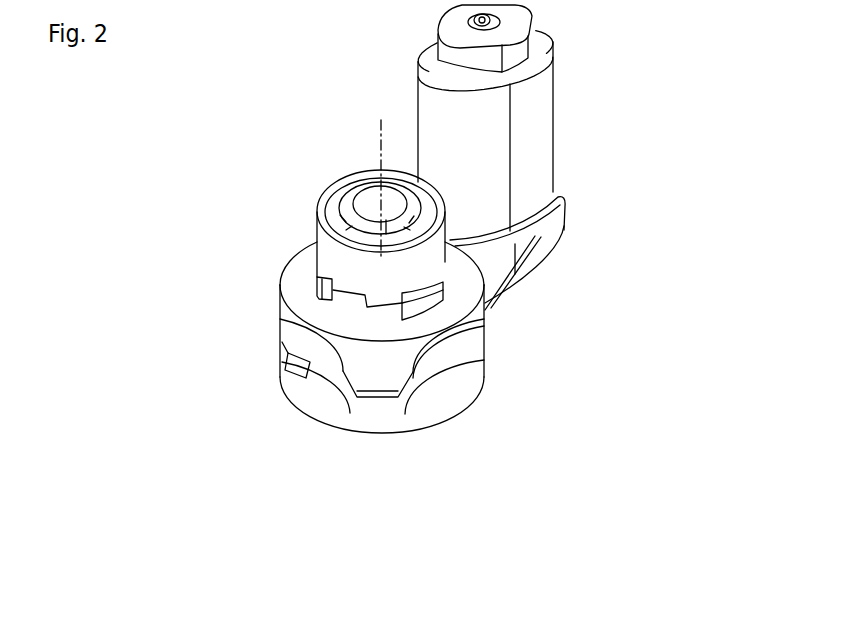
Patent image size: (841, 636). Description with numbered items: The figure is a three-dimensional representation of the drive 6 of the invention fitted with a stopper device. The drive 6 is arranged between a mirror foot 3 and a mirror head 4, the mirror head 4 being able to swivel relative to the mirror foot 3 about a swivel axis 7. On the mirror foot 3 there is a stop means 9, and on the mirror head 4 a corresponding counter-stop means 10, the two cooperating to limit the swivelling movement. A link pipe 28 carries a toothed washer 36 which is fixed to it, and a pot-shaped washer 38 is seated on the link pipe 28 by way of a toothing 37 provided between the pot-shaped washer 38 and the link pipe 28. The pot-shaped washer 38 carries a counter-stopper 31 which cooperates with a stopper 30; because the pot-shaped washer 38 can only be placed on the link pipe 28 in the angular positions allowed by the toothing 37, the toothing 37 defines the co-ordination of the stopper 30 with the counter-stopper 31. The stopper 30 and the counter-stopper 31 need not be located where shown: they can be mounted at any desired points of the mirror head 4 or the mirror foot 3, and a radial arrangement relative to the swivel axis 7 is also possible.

The mirror foot 3 is at (425, 412).
The mirror head 4 is at (290, 327).
The drive 6 is at (561, 76).
The swivel axis 7 is at (381, 135).
The stop means 9 is at (292, 366).
The counter-stop means 10 is at (372, 385).
The link pipe 28 is at (357, 180).
The stopper 30 is at (318, 280).
The counter-stopper 31 is at (500, 268).
The toothed washer 36 is at (443, 183).
The toothing 37 is at (317, 237).
The pot-shaped washer 38 is at (567, 205).